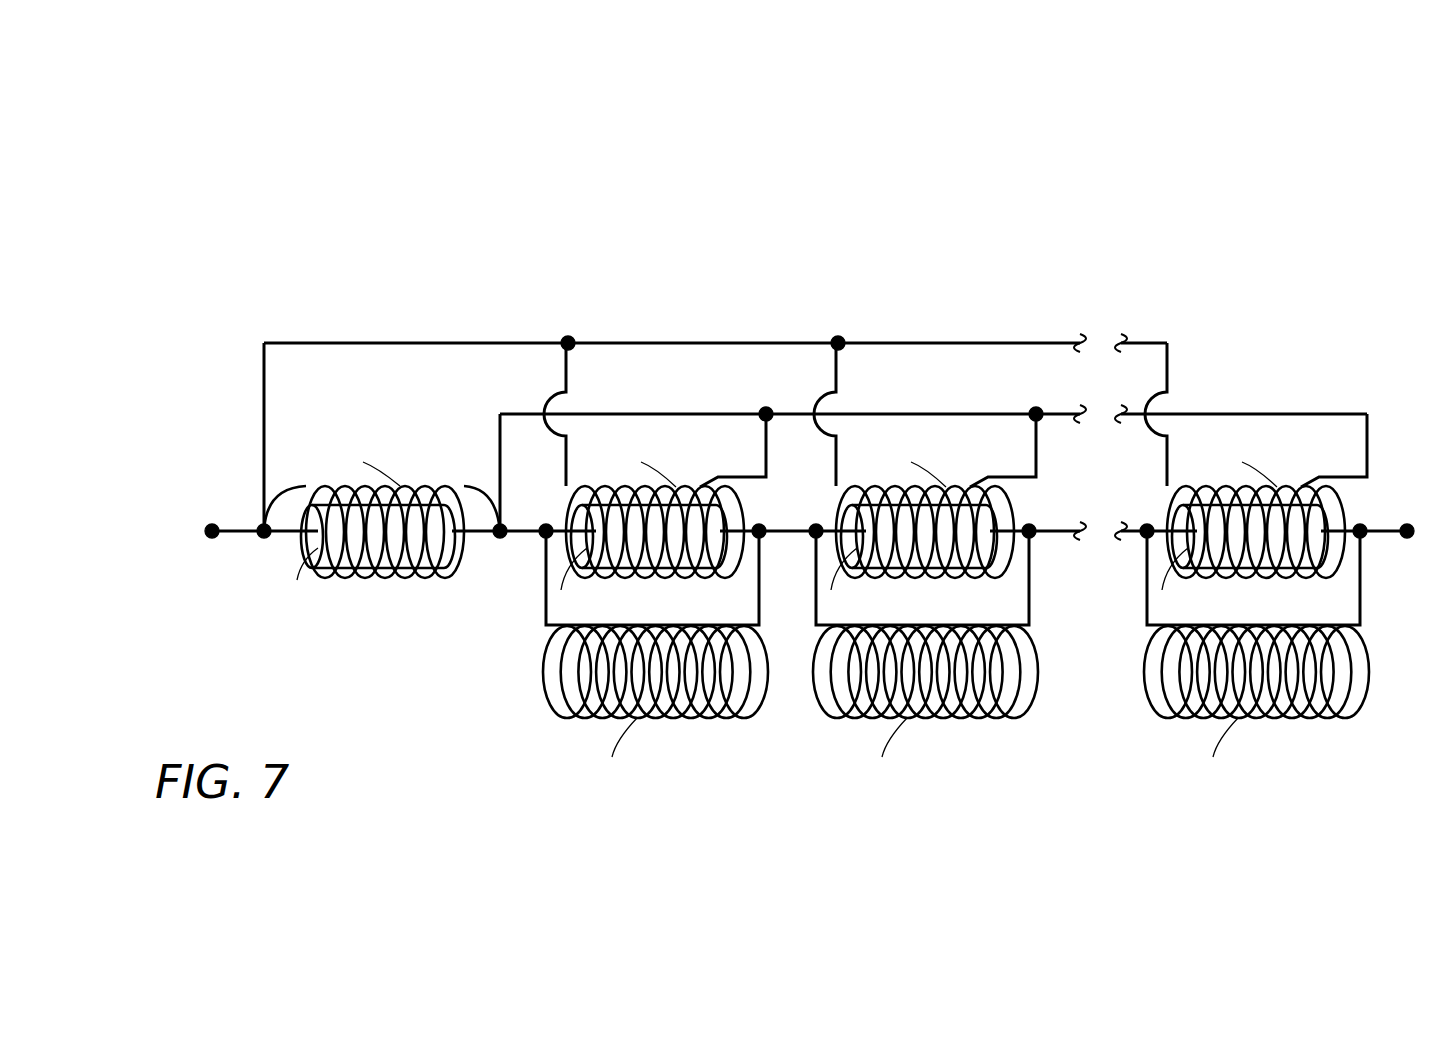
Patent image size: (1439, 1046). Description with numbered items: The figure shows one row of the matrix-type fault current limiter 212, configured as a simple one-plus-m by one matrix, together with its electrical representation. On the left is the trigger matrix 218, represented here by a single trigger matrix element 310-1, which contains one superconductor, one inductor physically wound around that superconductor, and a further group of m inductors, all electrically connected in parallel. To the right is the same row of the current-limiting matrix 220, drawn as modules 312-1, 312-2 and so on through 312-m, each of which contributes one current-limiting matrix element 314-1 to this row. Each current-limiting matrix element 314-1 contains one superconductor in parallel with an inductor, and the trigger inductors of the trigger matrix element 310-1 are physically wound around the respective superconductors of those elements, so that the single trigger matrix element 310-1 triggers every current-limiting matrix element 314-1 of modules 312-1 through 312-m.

The matrix-type fault current limiter 212 is at (276, 171).
The trigger matrix 218 is at (275, 300).
The current-limiting matrix 220 is at (1368, 218).
The trigger matrix element 310-1 is at (208, 598).
The current-limiting module 312-1 is at (770, 300).
The current-limiting module 312-2 is at (1040, 300).
The current-limiting module 312-m is at (1160, 300).
The current-limiting matrix element 314-1 is at (524, 722).